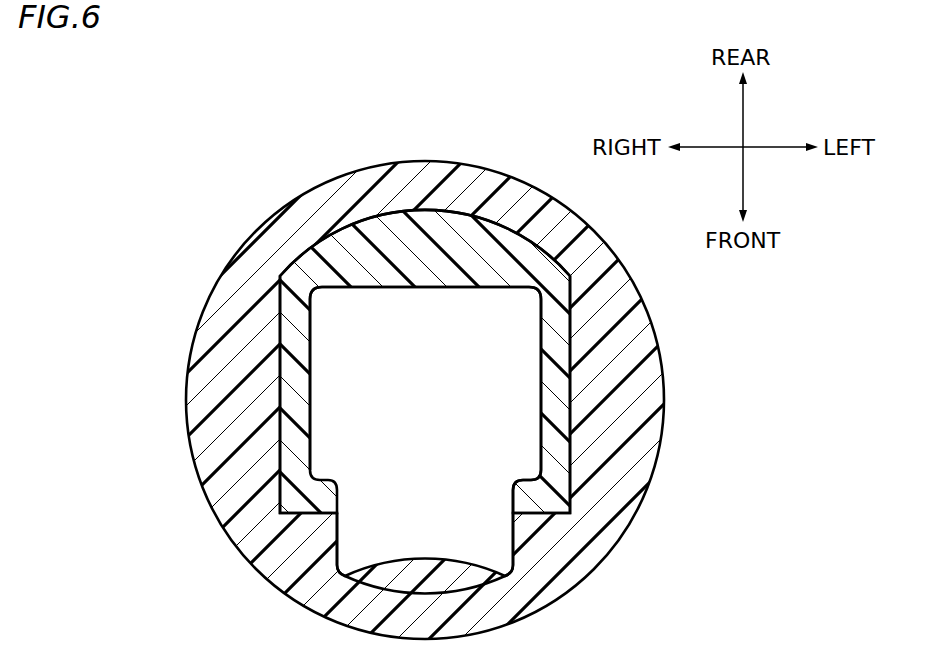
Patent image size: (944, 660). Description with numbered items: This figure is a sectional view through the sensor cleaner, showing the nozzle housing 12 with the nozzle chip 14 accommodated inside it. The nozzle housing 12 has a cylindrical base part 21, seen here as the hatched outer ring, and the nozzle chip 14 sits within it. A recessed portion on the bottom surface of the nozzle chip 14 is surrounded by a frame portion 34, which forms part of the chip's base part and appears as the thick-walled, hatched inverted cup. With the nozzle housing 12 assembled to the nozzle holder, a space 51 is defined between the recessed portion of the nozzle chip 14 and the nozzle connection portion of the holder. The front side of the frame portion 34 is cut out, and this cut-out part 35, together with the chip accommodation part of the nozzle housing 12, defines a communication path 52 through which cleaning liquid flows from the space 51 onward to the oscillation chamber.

The nozzle housing 12 is at (472, 330).
The nozzle chip 14 is at (450, 209).
The base part 21 is at (213, 424).
The frame portion 34 is at (560, 408).
The cut-out part 35 is at (512, 492).
The space 51 is at (358, 370).
The communication path 52 is at (420, 540).